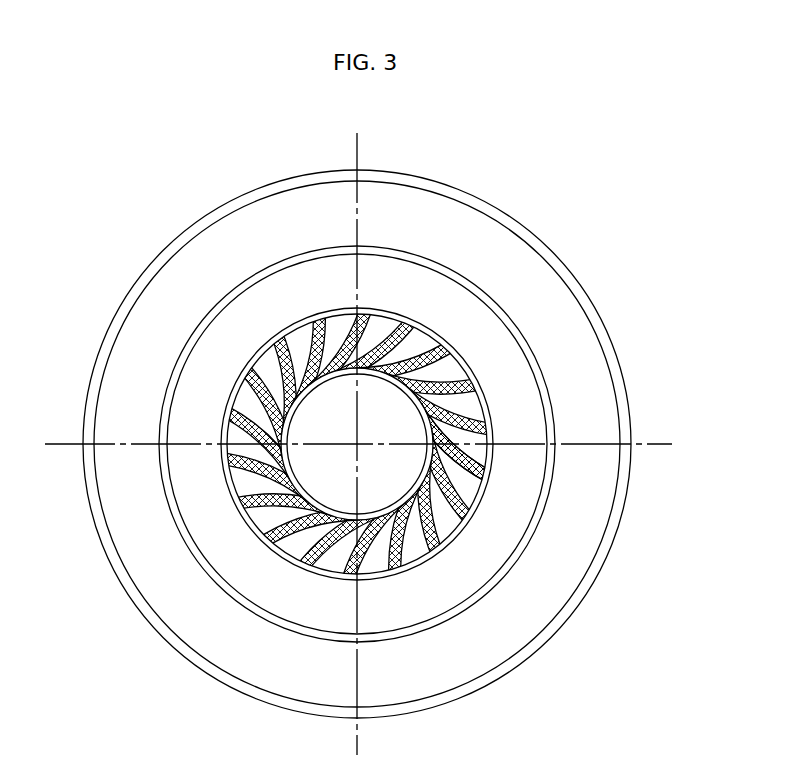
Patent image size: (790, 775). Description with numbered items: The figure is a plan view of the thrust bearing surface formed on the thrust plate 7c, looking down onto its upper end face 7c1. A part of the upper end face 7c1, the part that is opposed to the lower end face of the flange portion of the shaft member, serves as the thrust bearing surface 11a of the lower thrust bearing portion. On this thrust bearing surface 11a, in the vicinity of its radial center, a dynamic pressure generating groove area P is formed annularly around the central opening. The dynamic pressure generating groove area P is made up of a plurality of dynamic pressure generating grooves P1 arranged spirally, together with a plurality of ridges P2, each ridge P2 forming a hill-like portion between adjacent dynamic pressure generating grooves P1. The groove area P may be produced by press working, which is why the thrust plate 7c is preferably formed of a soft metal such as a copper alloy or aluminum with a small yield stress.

The thrust plate 7c is at (510, 207).
The upper end face of the thrust plate 7c1 is at (523, 275).
The thrust bearing surface 11a is at (469, 565).
The dynamic pressure generating groove area P is at (447, 343).
The dynamic pressure generating grooves P1 is at (493, 435).
The ridges P2 is at (493, 462).